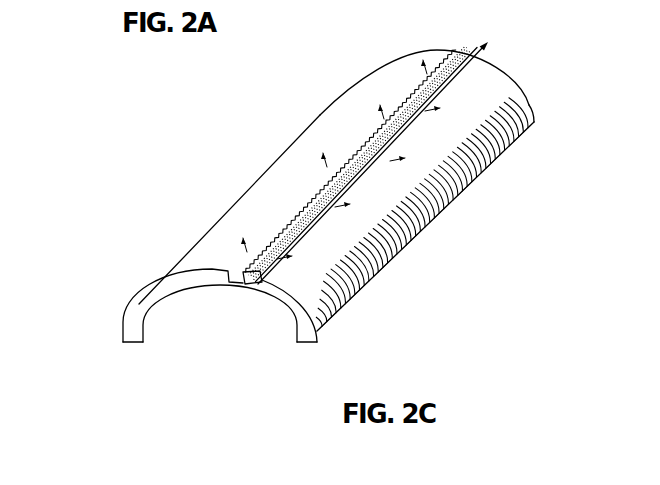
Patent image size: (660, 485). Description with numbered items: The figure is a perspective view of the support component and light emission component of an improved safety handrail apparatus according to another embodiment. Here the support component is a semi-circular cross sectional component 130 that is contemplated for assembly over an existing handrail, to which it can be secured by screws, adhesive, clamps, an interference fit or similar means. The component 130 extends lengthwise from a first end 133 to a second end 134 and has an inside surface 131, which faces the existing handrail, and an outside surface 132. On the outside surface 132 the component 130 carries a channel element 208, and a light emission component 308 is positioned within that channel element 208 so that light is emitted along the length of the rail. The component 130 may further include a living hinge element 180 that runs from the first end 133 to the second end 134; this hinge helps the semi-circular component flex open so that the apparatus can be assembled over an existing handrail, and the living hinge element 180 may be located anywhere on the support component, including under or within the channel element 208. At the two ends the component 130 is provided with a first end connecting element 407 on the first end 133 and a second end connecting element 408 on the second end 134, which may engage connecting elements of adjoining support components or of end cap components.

The semi-circular cross sectional component 130 is at (450, 188).
The inside surface 131 is at (272, 316).
The outside surface 132 is at (219, 239).
The first end 133 is at (135, 330).
The second end 134 is at (531, 104).
The living hinge element 180 is at (449, 52).
The channel element 208 is at (316, 222).
The light emission component 308 is at (350, 148).
The first end connecting element 407 is at (145, 309).
The second end connecting element 408 is at (507, 70).